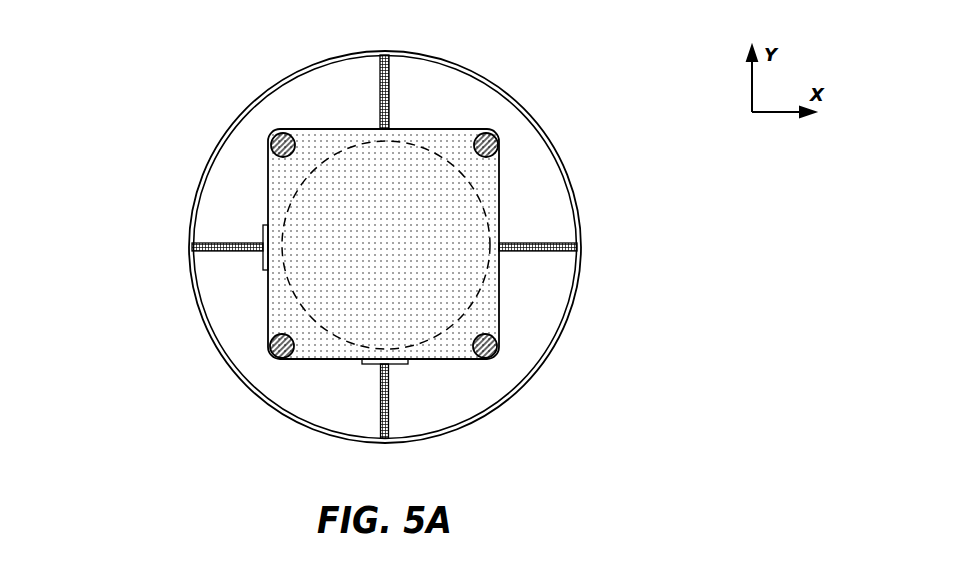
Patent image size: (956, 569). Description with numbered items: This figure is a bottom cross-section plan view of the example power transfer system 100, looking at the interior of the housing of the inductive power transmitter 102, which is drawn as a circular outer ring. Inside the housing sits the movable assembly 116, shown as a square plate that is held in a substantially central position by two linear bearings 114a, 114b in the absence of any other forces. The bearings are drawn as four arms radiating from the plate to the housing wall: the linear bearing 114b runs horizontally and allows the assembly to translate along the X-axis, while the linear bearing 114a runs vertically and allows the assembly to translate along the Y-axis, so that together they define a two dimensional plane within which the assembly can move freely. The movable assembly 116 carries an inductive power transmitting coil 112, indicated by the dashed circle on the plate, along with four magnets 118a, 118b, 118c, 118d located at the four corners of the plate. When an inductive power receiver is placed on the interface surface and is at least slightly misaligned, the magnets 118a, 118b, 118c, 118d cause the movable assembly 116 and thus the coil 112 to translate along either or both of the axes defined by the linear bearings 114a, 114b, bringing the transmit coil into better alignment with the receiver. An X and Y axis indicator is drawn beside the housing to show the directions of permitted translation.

The power transfer system 100 is at (68, 13).
The inductive power transmitter 102 is at (188, 246).
The inductive power transmitting coil 112 is at (500, 290).
The linear bearing 114a is at (390, 90).
The linear bearing 114b is at (530, 243).
The movable assembly 116 is at (500, 187).
The magnet 118a is at (271, 145).
The magnet 118b is at (270, 345).
The magnet 118c is at (497, 352).
The magnet 118d is at (498, 141).